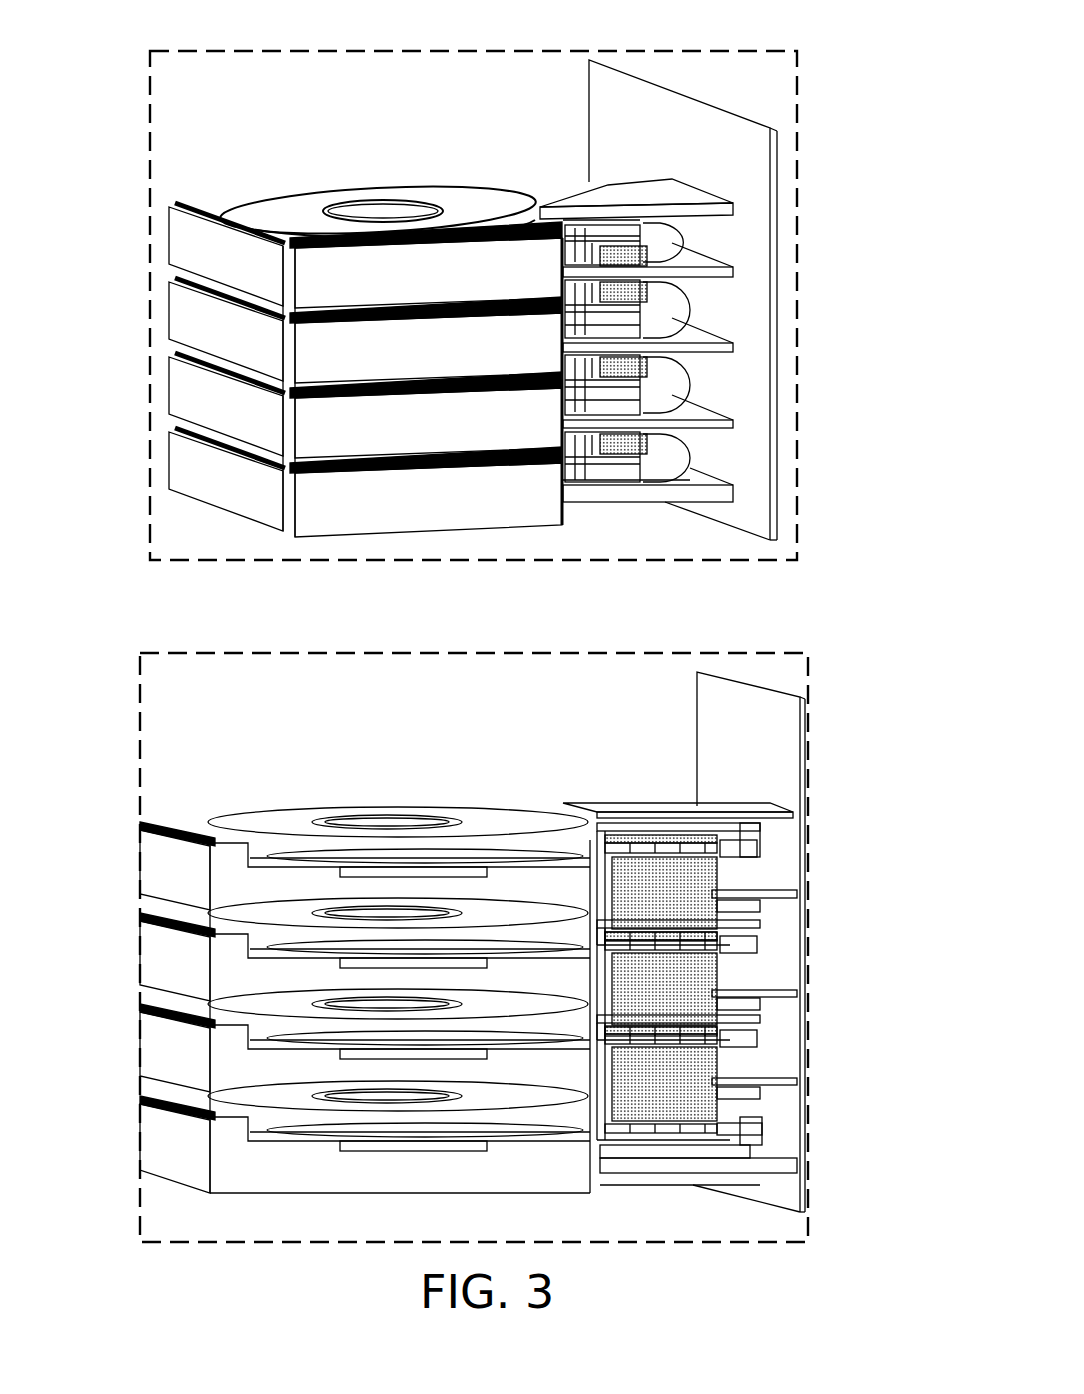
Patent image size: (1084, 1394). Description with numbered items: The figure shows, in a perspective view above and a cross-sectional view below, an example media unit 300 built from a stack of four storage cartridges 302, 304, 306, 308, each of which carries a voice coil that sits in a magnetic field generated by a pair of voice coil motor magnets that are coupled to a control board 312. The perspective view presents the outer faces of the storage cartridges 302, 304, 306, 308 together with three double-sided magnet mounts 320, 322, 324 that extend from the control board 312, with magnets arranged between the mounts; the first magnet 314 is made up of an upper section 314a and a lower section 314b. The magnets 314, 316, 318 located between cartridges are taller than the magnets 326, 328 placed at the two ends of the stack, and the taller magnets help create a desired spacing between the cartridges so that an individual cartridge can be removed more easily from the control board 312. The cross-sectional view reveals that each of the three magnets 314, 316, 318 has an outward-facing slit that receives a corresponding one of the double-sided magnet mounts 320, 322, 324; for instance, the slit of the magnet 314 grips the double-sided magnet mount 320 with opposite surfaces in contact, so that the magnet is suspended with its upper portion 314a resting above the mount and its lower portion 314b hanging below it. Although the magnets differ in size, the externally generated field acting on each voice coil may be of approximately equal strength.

The media unit 300 is at (150, 51).
The storage cartridge 302 is at (657, 538).
The storage cartridge 304 is at (200, 972).
The storage cartridge 306 is at (437, 436).
The storage cartridge 308 is at (437, 280).
The control board 312 is at (648, 125).
The first magnet 314 is at (679, 902).
The upper portion of the first magnet 314a is at (697, 253).
The lower portion of the first magnet 314b is at (655, 298).
The magnet 316 is at (691, 1004).
The magnet 318 is at (684, 1094).
The double-sided magnet mount 320 is at (713, 267).
The double-sided magnet mount 322 is at (713, 343).
The double-sided magnet mount 324 is at (713, 421).
The magnet 326 is at (763, 835).
The magnet 328 is at (763, 1140).